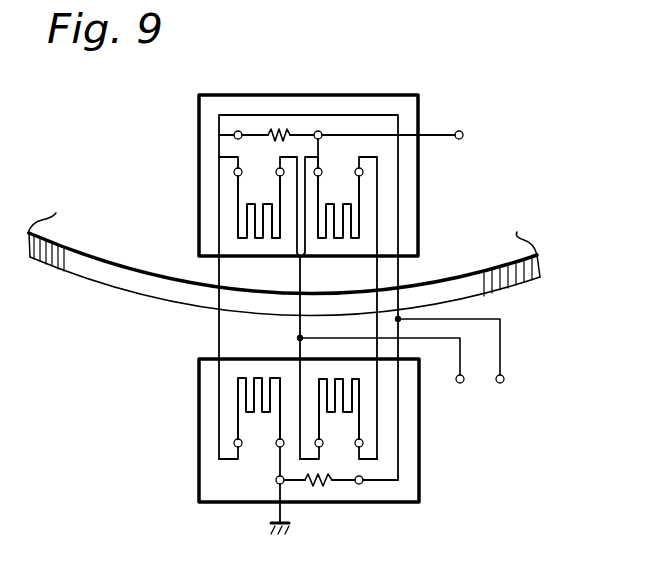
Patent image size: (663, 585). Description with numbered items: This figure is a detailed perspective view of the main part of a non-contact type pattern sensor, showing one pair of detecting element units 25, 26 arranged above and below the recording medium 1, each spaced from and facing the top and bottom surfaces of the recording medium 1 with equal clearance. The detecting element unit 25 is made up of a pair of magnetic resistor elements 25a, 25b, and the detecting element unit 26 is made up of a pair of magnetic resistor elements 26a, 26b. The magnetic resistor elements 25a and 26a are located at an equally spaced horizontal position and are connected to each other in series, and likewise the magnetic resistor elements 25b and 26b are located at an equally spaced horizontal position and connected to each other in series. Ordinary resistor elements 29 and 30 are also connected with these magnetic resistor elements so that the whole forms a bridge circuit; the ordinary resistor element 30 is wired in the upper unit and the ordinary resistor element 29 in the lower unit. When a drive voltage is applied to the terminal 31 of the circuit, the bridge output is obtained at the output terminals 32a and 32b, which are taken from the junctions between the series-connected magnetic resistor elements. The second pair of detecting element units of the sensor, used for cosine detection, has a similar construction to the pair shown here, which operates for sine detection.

The recording medium 1 is at (93, 281).
The detecting element unit 25 is at (383, 93).
The magnetic resistor element 25a is at (268, 204).
The magnetic resistor element 25b is at (347, 204).
The detecting element unit 26 is at (386, 503).
The magnetic resistor element 26a is at (268, 413).
The magnetic resistor element 26b is at (343, 412).
The ordinary resistor element 29 is at (325, 490).
The ordinary resistor element 30 is at (284, 128).
The terminal 31 is at (458, 140).
The output terminal 32a is at (460, 383).
The output terminal 32b is at (500, 383).